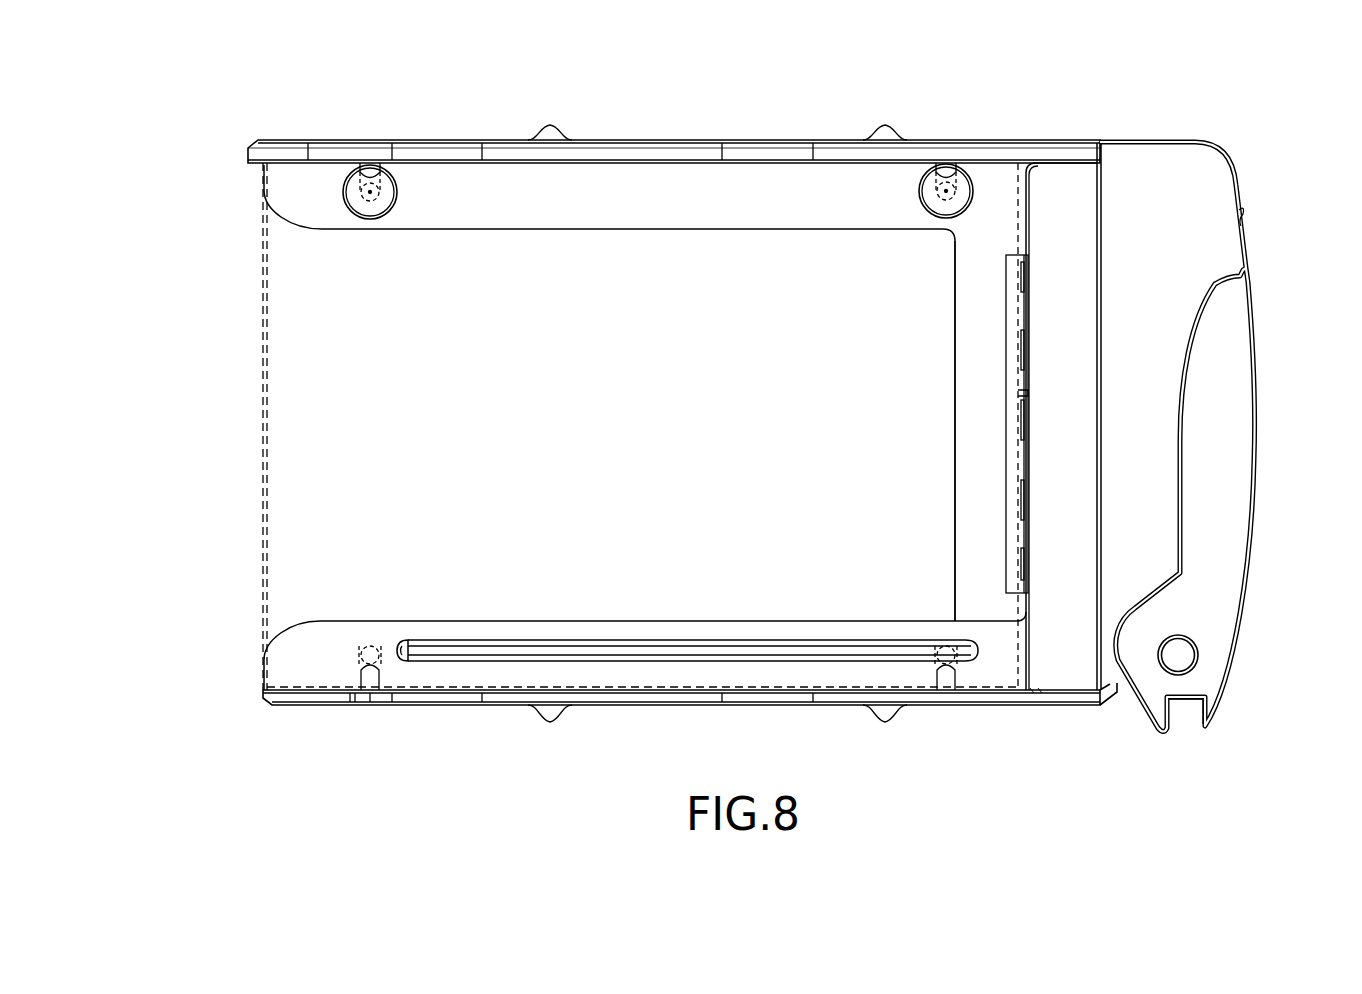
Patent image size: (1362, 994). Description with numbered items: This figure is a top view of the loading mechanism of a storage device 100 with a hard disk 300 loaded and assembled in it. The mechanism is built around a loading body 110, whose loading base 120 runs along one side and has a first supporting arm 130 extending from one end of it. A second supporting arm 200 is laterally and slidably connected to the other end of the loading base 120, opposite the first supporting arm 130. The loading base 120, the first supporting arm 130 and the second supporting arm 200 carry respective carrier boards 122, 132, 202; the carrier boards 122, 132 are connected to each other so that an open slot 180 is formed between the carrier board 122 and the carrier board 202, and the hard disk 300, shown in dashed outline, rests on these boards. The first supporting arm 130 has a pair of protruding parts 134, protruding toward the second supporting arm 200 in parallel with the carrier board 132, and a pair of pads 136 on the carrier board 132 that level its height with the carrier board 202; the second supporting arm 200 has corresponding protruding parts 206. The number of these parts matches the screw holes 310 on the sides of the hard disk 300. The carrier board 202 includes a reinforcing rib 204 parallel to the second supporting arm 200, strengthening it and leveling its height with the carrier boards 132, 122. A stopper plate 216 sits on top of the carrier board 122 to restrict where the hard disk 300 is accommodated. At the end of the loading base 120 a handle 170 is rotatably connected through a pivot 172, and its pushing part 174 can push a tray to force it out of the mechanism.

The loading mechanism of a storage device 100 is at (1238, 136).
The loading body 110 is at (945, 55).
The loading base 120 is at (1137, 158).
The carrier board 122 is at (962, 298).
The first supporting arm 130 is at (688, 142).
The carrier board 132 is at (616, 219).
The protruding parts 134 is at (371, 170).
The pads 136 is at (388, 182).
The handle 170 is at (1240, 462).
The pivot 172 is at (1182, 655).
The pushing part 174 is at (1210, 708).
The open slot 180 is at (312, 463).
The second supporting arm 200 is at (446, 703).
The carrier board 202 is at (706, 626).
The reinforcing rib 204 is at (531, 643).
The protruding parts 206 is at (368, 690).
The stopper plate 216 is at (1022, 390).
The hard disk 300 is at (264, 296).
The screw holes 310 is at (386, 185).